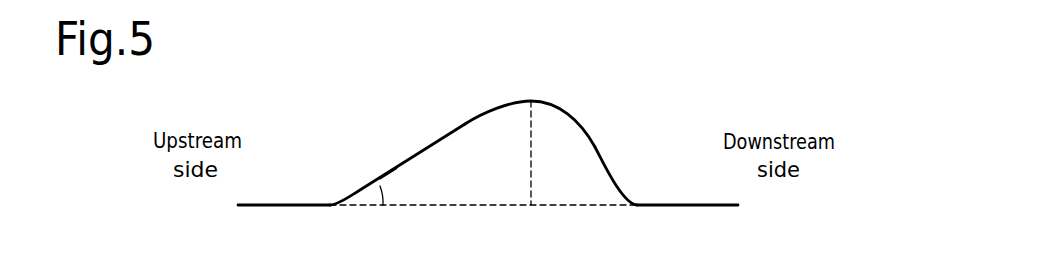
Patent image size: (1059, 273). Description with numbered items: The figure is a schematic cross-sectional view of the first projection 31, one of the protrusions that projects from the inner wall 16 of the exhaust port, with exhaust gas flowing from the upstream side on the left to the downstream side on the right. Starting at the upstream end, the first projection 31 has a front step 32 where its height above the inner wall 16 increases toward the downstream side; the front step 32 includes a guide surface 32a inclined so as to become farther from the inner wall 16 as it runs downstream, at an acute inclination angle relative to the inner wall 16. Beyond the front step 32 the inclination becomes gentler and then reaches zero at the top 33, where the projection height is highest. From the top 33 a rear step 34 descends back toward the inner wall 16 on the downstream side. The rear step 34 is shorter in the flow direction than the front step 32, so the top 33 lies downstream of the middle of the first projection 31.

The inner wall 16 is at (282, 205).
The first projection 31 is at (491, 125).
The front step 32 is at (447, 157).
The guide surface 32a is at (389, 173).
The top 33 is at (531, 104).
The rear step 34 is at (583, 148).